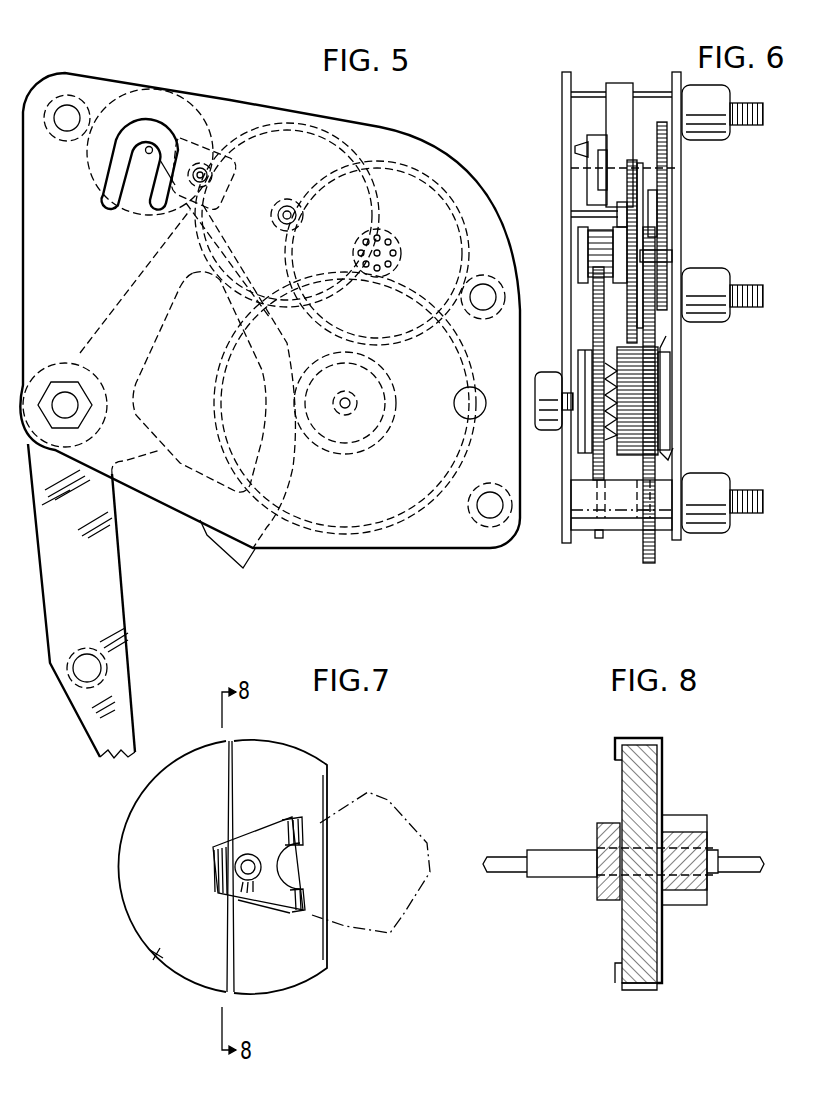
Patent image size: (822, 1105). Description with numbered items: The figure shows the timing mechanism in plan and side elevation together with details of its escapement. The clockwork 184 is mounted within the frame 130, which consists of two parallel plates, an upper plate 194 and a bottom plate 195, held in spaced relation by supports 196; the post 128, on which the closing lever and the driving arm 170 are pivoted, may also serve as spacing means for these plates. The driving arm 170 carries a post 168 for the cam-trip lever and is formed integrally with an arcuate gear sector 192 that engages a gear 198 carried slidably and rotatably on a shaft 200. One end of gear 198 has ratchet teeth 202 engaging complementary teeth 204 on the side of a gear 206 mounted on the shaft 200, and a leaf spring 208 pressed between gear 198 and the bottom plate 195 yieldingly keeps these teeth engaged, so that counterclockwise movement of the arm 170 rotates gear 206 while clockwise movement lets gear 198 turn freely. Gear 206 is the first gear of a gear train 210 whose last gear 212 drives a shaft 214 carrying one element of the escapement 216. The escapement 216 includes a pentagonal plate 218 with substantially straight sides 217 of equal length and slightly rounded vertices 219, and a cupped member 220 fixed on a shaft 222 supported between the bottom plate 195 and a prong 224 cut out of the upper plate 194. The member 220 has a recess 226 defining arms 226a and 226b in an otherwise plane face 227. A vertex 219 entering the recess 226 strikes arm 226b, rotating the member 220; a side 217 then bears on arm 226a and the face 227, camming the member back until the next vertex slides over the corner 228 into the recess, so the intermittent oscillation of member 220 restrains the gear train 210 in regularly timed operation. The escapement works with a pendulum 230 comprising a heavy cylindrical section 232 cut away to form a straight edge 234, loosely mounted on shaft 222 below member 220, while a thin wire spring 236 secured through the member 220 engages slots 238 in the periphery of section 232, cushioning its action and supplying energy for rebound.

In FIG. 5, the post 128 is at (58, 372).
In FIG. 6, the post 128 is at (620, 530).
In FIG. 5, the frame 130 is at (453, 176).
In FIG. 5, the post 168 is at (72, 682).
In FIG. 5, the driving arm 170 is at (100, 587).
In FIG. 5, the clockwork 184 is at (440, 522).
In FIG. 5, the arcuate gear sector 192 is at (272, 530).
In FIG. 6, the arcuate gear sector 192 is at (656, 548).
In FIG. 6, the upper plate 194 is at (563, 305).
In FIG. 6, the bottom plate 195 is at (680, 343).
In FIG. 6, the supports 196 is at (586, 92).
In FIG. 5, the gear 198 is at (349, 454).
In FIG. 6, the gear 198 is at (660, 408).
In FIG. 6, the shaft 200 is at (562, 433).
In FIG. 6, the ratchet teeth 202 is at (620, 422).
In FIG. 6, the complementary teeth 204 is at (590, 450).
In FIG. 6, the gear 206 is at (600, 539).
In FIG. 6, the leaf spring 208 is at (672, 450).
In FIG. 6, the gear train 210 is at (612, 307).
In FIG. 6, the last gear 212 is at (647, 158).
In FIG. 5, the shaft 214 is at (203, 170).
In FIG. 6, the shaft 214 is at (576, 177).
In FIG. 6, the escapement 216 is at (560, 154).
In FIG. 7, the sides 217 is at (417, 895).
In FIG. 5, the pentagonal plate 218 is at (238, 148).
In FIG. 6, the pentagonal plate 218 is at (590, 187).
In FIG. 7, the pentagonal plate 218 is at (407, 843).
In FIG. 7, the vertices 219 is at (392, 937).
In FIG. 5, the cupped member 220 is at (168, 147).
In FIG. 7, the cupped member 220 is at (250, 845).
In FIG. 8, the cupped member 220 is at (690, 838).
In FIG. 5, the shaft 222 is at (152, 147).
In FIG. 8, the shaft 222 is at (551, 868).
In FIG. 5, the prong 224 is at (135, 178).
In FIG. 7, the recess 226 is at (284, 877).
In FIG. 7, the arm 226a is at (282, 833).
In FIG. 7, the arm 226b is at (298, 913).
In FIG. 7, the face 227 is at (307, 897).
In FIG. 7, the corner 228 is at (304, 827).
In FIG. 7, the pendulum 230 is at (134, 932).
In FIG. 5, the cylindrical section 232 is at (108, 100).
In FIG. 7, the cylindrical section 232 is at (147, 964).
In FIG. 8, the cylindrical section 232 is at (637, 800).
In FIG. 7, the straight edge 234 is at (327, 797).
In FIG. 7, the thin wire spring 236 is at (222, 793).
In FIG. 8, the thin wire spring 236 is at (663, 775).
In FIG. 7, the slots 238 is at (232, 742).
In FIG. 8, the slots 238 is at (618, 740).